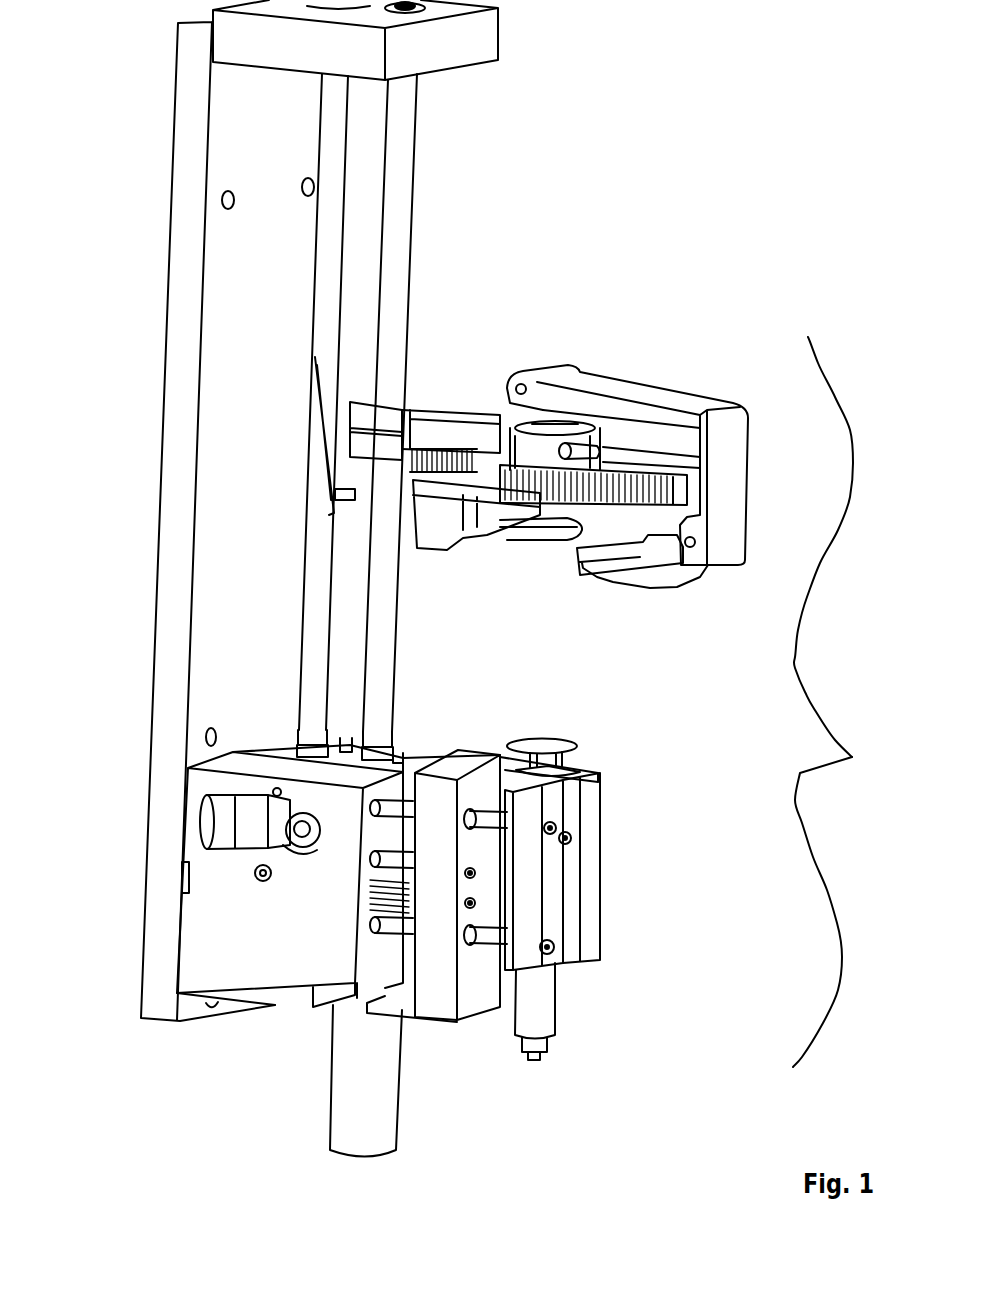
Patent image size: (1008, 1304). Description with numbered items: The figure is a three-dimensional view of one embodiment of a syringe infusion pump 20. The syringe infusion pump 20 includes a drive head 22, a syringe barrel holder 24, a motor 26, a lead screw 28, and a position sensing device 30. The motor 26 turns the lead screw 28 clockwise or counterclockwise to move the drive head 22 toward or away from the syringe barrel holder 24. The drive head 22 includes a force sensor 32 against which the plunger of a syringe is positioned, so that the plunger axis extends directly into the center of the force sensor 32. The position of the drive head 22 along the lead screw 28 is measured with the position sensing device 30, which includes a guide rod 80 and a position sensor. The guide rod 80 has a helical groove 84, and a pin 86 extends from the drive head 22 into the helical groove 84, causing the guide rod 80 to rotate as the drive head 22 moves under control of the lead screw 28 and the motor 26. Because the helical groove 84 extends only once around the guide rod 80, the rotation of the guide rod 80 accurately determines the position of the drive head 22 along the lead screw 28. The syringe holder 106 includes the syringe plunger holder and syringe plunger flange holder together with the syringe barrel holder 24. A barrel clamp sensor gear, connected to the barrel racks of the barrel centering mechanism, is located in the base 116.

The syringe infusion pump 20 is at (628, 984).
The drive head 22 is at (710, 353).
The syringe barrel holder 24 is at (638, 886).
The motor 26 is at (358, 1088).
The lead screw 28 is at (402, 158).
The position sensing device 30 is at (226, 240).
The force sensor 32 is at (528, 536).
The guide rod 80 is at (332, 257).
The helical groove 84 is at (325, 408).
The pin 86 is at (347, 490).
The syringe holder 106 is at (850, 702).
The base 116 is at (268, 971).